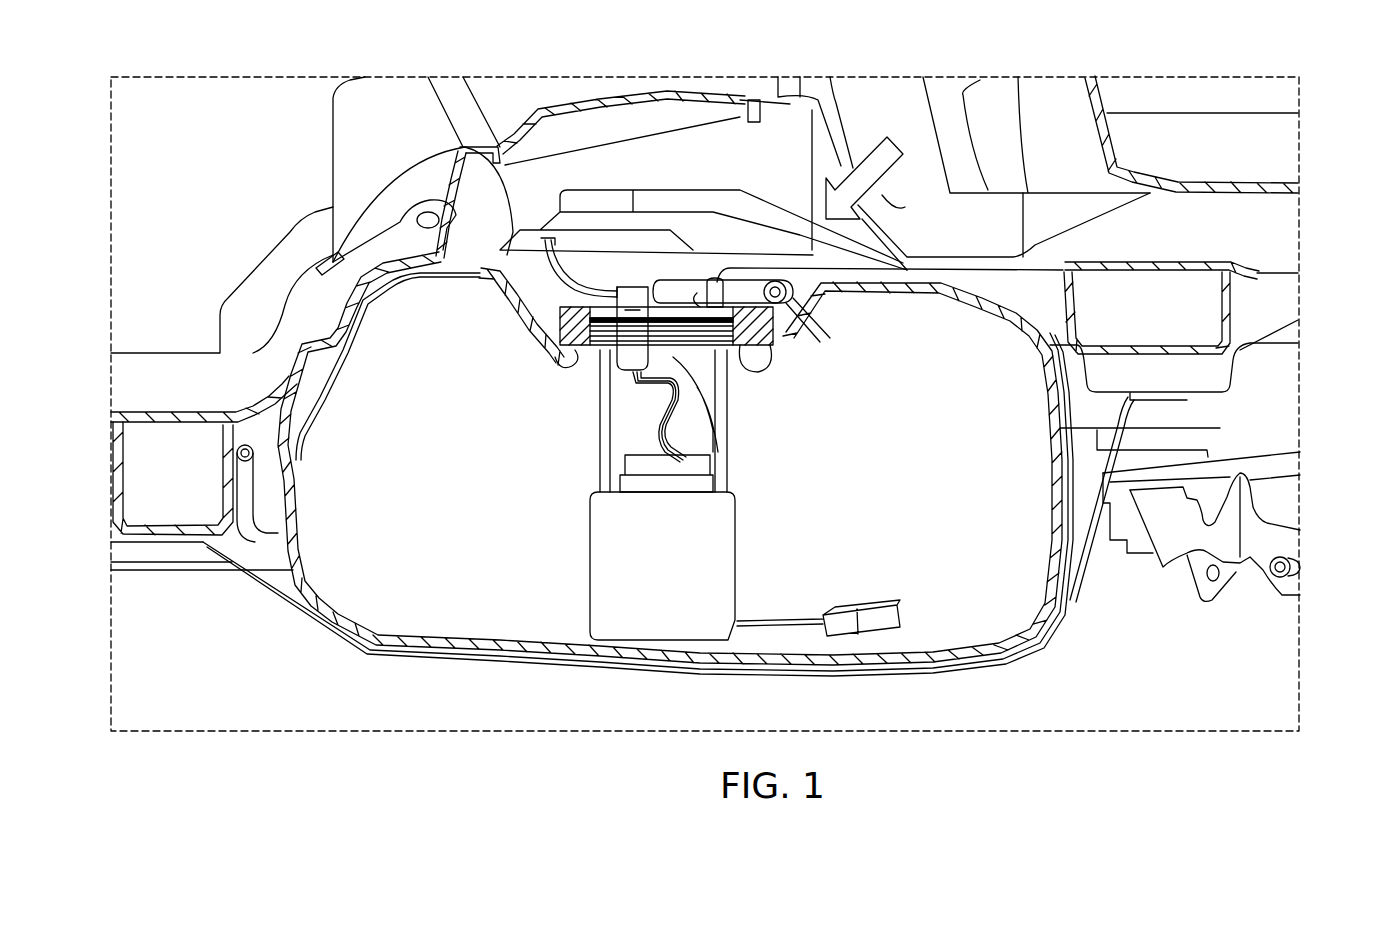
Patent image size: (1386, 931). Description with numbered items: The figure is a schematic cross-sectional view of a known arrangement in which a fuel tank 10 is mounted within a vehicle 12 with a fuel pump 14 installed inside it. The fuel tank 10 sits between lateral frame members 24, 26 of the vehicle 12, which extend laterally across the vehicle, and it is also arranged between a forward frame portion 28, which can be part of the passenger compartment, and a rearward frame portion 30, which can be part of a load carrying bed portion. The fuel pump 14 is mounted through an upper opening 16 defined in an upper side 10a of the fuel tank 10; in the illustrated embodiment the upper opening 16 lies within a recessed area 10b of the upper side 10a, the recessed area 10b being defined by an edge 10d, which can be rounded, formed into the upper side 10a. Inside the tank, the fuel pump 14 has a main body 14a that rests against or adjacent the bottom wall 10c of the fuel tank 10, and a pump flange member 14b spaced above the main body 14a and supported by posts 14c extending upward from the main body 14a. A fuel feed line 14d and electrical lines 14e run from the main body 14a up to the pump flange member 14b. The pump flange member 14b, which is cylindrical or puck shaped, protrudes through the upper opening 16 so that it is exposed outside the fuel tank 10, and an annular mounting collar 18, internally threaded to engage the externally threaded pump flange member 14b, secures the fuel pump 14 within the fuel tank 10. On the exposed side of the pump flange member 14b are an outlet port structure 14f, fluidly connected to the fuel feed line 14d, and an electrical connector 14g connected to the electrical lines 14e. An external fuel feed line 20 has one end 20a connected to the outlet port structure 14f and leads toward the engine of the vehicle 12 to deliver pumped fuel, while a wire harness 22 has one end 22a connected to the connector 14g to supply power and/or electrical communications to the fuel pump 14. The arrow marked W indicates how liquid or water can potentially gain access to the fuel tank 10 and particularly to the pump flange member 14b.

The fuel tank 10 is at (294, 575).
The upper side 10a is at (470, 284).
The recessed area 10b is at (568, 362).
The bottom wall 10c is at (845, 662).
The edge 10d is at (458, 147).
The vehicle 12 is at (933, 54).
The fuel pump 14 is at (710, 390).
The main body 14a is at (613, 572).
The pump flange member 14b is at (720, 388).
The posts 14c is at (607, 448).
The fuel feed line 14d is at (718, 412).
The electrical lines 14e is at (657, 430).
The outlet port structure 14f is at (714, 284).
The electrical connector 14g is at (632, 287).
The upper opening 16 is at (748, 372).
The mounting collar 18 is at (760, 360).
The fuel feed line 20 is at (742, 290).
The end 20a is at (690, 292).
The wire harness 22 is at (522, 318).
The end 22a is at (585, 265).
The lateral frame member 24 is at (135, 536).
The lateral frame member 26 is at (1232, 322).
The forward frame portion 28 is at (246, 188).
The rearward frame portion 30 is at (1060, 143).